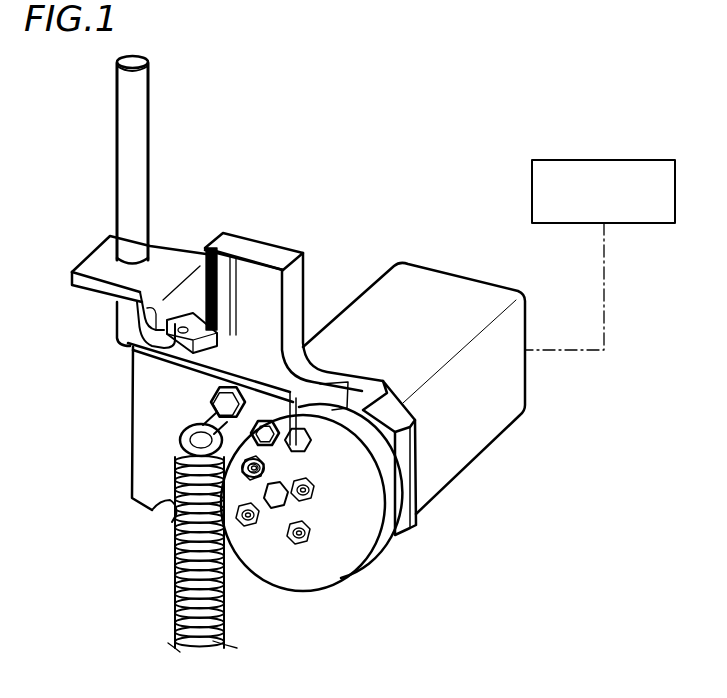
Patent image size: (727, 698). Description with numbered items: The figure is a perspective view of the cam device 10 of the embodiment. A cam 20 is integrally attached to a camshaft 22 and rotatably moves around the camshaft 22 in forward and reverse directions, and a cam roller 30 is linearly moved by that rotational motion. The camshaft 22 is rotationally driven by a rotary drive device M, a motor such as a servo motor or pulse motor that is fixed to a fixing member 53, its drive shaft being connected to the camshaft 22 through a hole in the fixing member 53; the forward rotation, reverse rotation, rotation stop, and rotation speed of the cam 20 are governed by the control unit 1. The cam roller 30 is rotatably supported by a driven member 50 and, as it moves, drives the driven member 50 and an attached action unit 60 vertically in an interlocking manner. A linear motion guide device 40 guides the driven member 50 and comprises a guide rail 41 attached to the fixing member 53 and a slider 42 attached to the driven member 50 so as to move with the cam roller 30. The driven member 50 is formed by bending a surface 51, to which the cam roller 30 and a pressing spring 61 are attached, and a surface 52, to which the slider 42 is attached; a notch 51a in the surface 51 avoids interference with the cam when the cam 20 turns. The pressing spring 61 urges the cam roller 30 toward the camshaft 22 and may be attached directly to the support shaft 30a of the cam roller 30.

The control unit 1 is at (640, 160).
The cam device 10 is at (328, 239).
The cam 20 is at (345, 555).
The camshaft 22 is at (277, 502).
The cam roller 30 is at (304, 412).
The support shaft 30a is at (250, 448).
The linear motion guide device 40 is at (272, 155).
The guide rail 41 is at (228, 266).
The slider 42 is at (195, 328).
The driven member 50 is at (133, 388).
The surface 51 is at (153, 417).
The notch 51a is at (172, 516).
The surface 52 is at (170, 312).
The fixing member 53 is at (407, 482).
The action unit 60 is at (130, 155).
The pressing spring 61 is at (178, 598).
The rotary drive device M is at (490, 412).